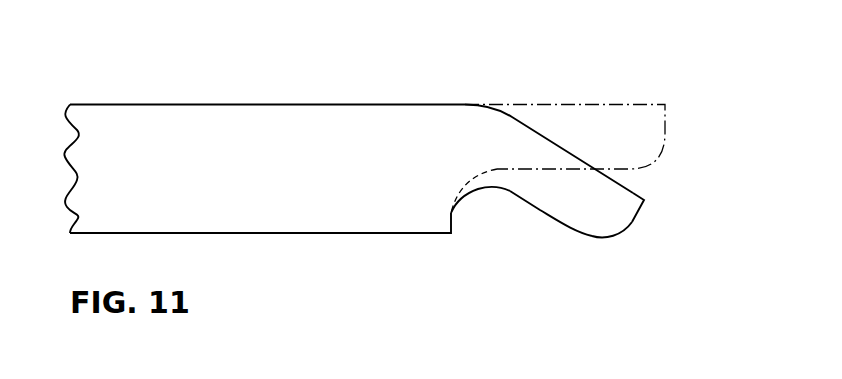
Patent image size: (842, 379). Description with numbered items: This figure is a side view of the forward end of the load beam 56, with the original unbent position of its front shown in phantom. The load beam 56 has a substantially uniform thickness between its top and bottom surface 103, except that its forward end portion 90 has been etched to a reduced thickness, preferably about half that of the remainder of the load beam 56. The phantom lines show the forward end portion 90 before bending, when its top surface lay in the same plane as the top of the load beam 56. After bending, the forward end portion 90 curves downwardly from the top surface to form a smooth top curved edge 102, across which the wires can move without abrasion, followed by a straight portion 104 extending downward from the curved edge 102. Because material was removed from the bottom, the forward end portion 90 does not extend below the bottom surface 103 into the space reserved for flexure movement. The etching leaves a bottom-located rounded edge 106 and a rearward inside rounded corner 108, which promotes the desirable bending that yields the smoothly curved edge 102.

The load beam 56 is at (253, 111).
The top curved edge 102 is at (518, 116).
The bottom surface 103 is at (347, 233).
The straight portion 104 is at (636, 191).
The bottom-located rounded edge 106 is at (632, 220).
The forward end portion 90 is at (562, 203).
The inside rounded corner 108 is at (476, 193).